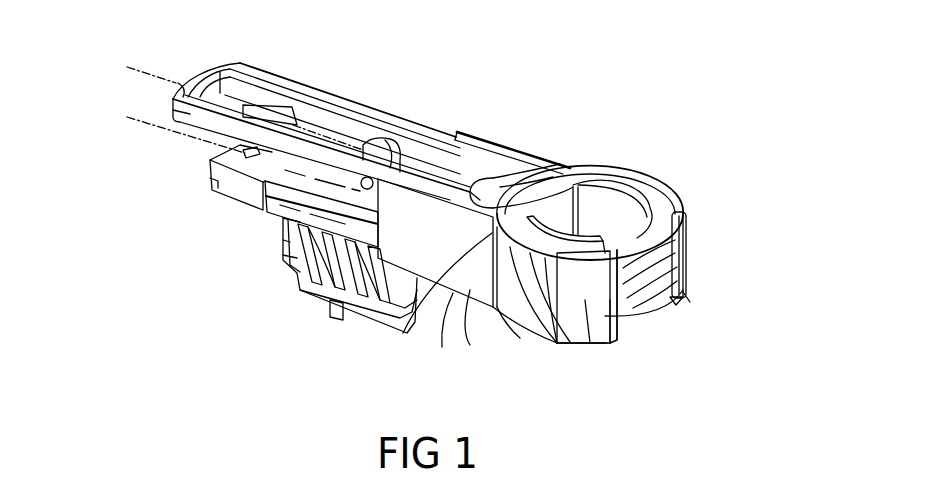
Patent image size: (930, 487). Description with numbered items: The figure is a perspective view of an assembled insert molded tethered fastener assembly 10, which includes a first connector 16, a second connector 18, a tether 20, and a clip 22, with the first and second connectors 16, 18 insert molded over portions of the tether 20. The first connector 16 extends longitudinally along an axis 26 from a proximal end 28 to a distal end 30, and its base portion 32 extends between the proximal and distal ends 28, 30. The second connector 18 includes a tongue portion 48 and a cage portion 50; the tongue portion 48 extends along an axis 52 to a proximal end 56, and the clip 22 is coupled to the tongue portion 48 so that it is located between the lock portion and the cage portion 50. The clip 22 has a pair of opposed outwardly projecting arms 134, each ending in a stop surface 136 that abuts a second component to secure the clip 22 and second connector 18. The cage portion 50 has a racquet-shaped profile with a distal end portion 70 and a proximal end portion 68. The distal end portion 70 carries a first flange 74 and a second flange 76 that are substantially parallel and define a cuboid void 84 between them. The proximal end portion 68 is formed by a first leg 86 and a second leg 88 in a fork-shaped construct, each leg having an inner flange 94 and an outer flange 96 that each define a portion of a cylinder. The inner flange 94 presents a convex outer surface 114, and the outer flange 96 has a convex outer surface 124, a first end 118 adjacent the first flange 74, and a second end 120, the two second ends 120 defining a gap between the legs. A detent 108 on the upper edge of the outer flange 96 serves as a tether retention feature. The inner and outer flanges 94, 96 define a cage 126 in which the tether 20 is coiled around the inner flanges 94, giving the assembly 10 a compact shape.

The tethered fastener assembly 10 is at (573, 76).
The first connector 16 is at (240, 56).
The second connector 18 is at (205, 196).
The tether 20 is at (670, 330).
The clip 22 is at (282, 296).
The axis 26 is at (127, 67).
The proximal end 28 is at (475, 170).
The distal end 30 is at (183, 97).
The base portion 32 is at (187, 115).
The tongue portion 48 is at (247, 192).
The cage portion 50 is at (468, 332).
The axis 52 is at (150, 127).
The proximal end 56 is at (241, 160).
The proximal end portion 68 is at (520, 350).
The distal end portion 70 is at (504, 118).
The first flange 74 is at (518, 143).
The second flange 76 is at (470, 283).
The void 84 is at (533, 170).
The first leg 86 is at (697, 305).
The second leg 88 is at (617, 366).
The inner flange 94 is at (653, 184).
The outer flange 96 is at (613, 313).
The detent 108 is at (563, 343).
The outer surface 114 is at (523, 330).
The first end 118 is at (413, 327).
The second end 120 is at (688, 252).
The outer surface 124 is at (609, 297).
The cage 126 is at (593, 343).
The arms 134 is at (328, 303).
The stop surface 136 is at (292, 262).